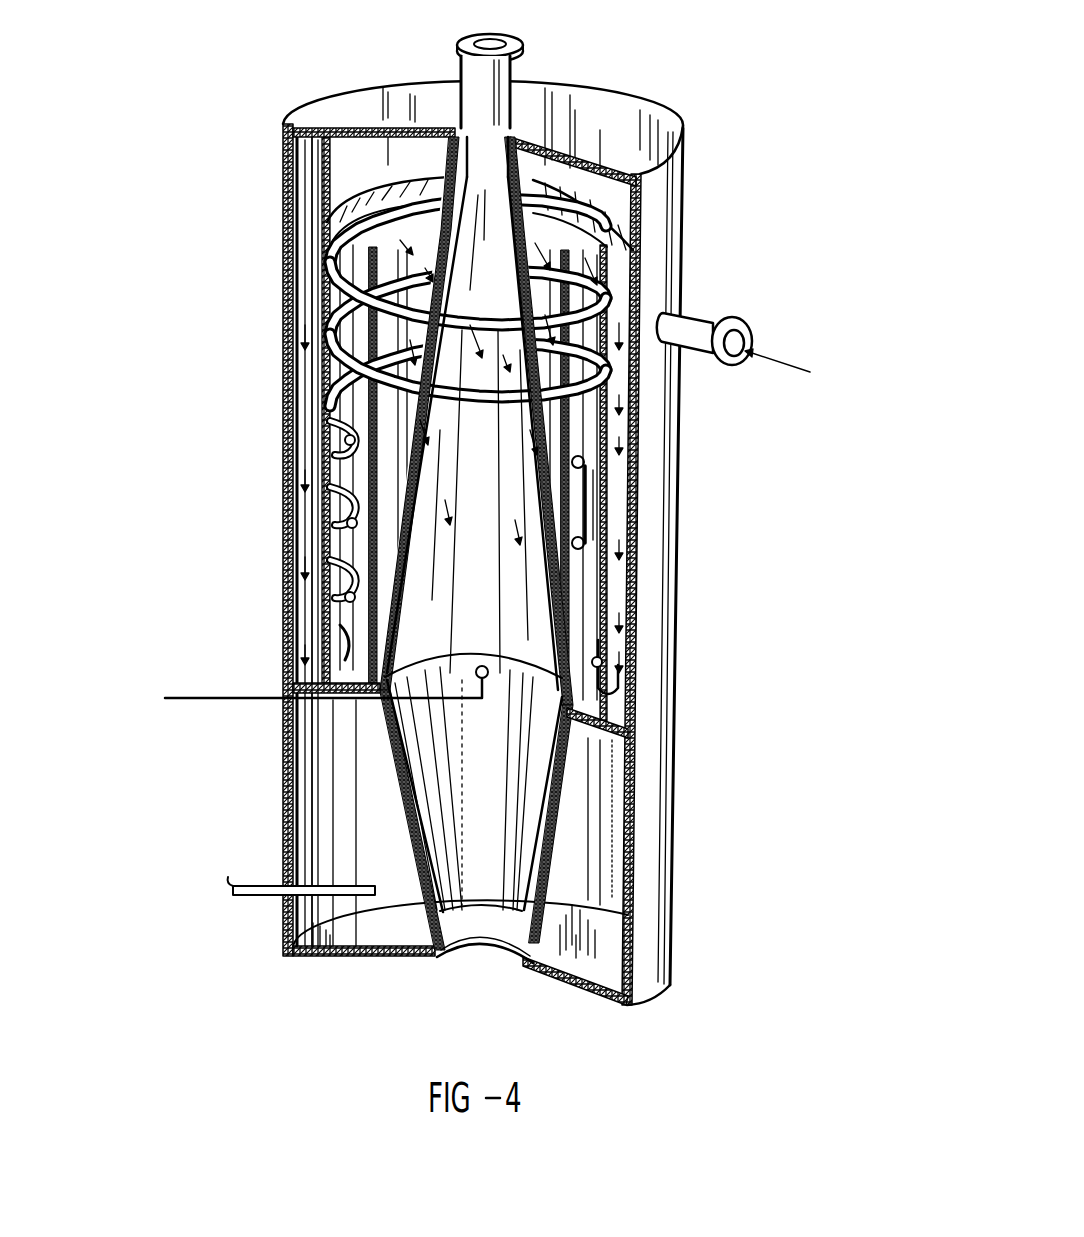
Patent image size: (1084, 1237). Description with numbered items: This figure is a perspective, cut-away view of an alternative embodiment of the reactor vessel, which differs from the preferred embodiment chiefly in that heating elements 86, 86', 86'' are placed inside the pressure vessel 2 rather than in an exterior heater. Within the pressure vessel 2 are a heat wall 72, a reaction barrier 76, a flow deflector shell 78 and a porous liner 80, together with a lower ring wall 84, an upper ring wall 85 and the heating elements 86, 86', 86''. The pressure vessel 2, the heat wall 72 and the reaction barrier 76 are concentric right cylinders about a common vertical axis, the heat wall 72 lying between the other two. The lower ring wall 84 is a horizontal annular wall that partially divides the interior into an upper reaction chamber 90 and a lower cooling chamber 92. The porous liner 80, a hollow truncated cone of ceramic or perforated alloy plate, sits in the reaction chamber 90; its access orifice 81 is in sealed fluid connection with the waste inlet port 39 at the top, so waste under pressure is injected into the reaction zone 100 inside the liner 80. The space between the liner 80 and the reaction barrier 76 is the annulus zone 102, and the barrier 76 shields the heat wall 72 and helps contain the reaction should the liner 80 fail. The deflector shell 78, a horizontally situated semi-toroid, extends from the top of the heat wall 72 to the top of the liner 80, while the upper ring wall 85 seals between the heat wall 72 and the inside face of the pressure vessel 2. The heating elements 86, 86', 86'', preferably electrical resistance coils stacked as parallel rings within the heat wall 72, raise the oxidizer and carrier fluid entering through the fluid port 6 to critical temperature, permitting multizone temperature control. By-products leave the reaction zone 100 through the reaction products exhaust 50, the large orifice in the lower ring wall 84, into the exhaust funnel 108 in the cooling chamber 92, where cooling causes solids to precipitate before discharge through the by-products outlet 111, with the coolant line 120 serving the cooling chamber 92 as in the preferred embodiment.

The pressure vessel 2 is at (236, 328).
The fluid port 6 is at (707, 323).
The waste inlet port 39 is at (498, 105).
The reaction products exhaust 50 is at (440, 722).
The heat wall 72 is at (613, 497).
The reaction barrier 76 is at (330, 420).
The flow deflector shell 78 is at (580, 222).
The porous liner 80 is at (368, 288).
The access orifice 81 is at (522, 163).
The lower ring wall 84 is at (345, 668).
The upper ring wall 85 is at (285, 207).
The heating element 86 is at (729, 502).
The heating element 86' is at (732, 627).
The heating element 86'' is at (257, 540).
The reaction chamber 90 is at (505, 598).
The cooling chamber 92 is at (570, 845).
The reaction zone 100 is at (482, 357).
The annulus zone 102 is at (352, 195).
The exhaust funnel 108 is at (567, 782).
The by-products outlet 111 is at (480, 943).
The coolant line 120 is at (252, 897).